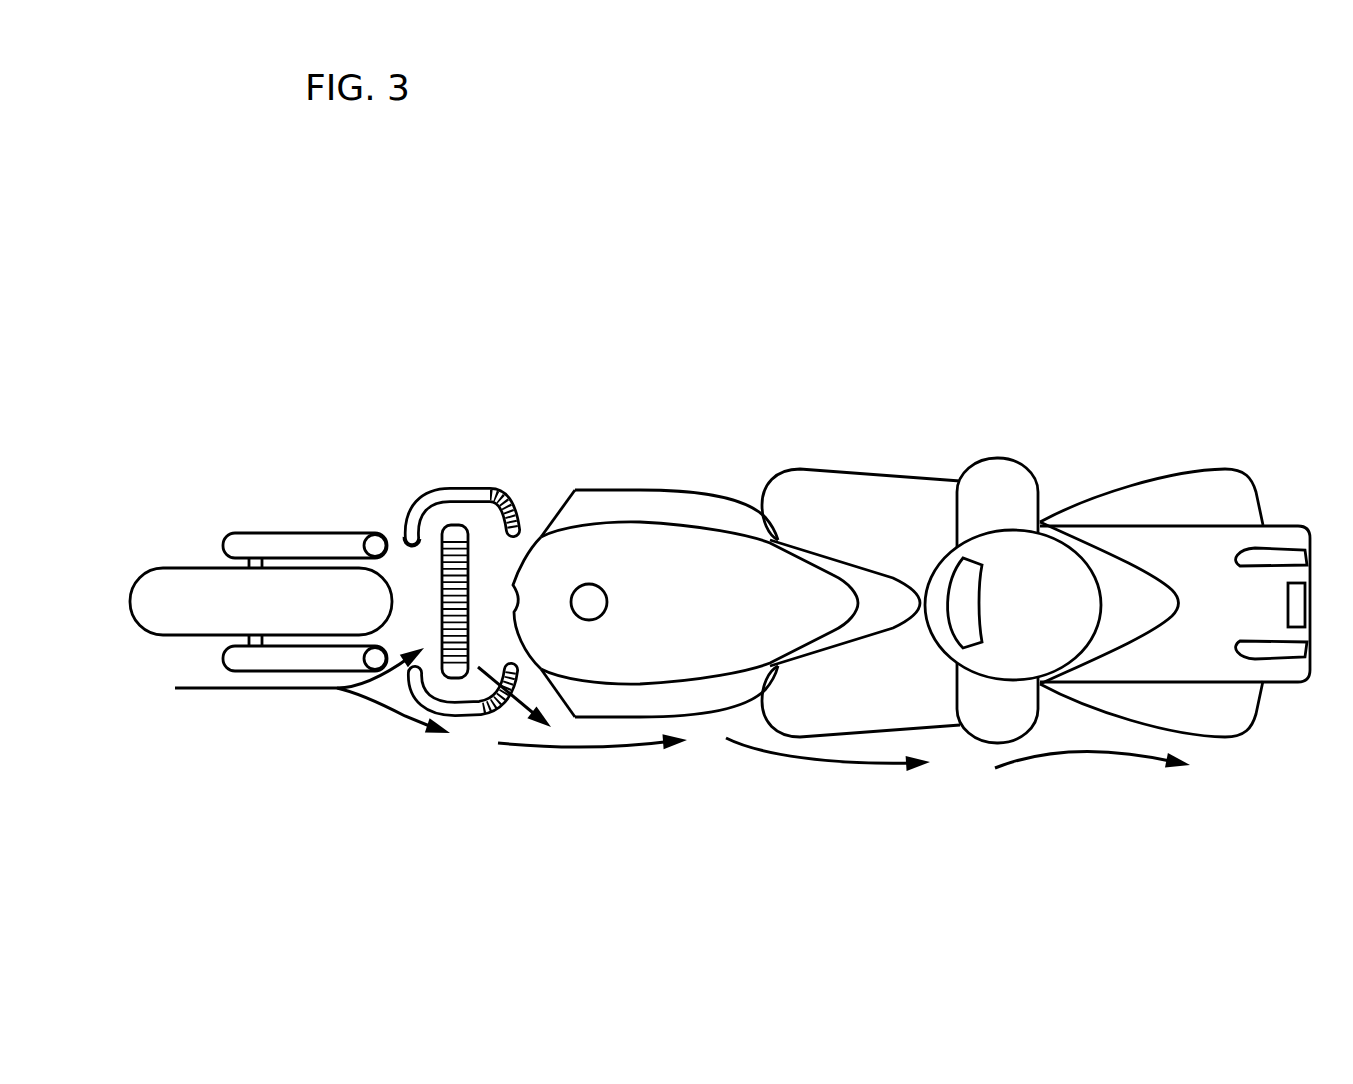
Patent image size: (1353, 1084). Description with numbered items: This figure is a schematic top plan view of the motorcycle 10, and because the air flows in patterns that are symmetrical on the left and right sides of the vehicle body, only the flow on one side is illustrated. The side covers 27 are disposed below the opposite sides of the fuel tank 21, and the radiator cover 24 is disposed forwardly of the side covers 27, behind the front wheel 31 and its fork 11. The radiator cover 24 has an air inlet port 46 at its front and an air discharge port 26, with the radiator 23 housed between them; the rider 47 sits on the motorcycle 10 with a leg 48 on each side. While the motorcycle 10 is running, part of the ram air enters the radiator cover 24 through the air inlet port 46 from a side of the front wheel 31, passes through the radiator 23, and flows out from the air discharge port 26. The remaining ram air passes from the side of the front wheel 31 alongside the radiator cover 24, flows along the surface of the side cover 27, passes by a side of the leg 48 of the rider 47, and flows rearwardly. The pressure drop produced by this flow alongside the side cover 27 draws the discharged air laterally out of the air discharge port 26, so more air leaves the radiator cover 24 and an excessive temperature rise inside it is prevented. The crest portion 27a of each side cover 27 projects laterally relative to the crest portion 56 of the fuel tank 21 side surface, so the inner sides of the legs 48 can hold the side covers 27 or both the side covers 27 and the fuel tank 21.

The motorcycle 10 is at (335, 427).
The front fork 11 is at (270, 532).
The front wheel 31 is at (168, 567).
The fuel tank 21 is at (687, 560).
The radiator 23 is at (458, 533).
The radiator cover 24 is at (452, 488).
The air discharge port 26 is at (517, 507).
The side cover 27 is at (608, 488).
The crest portion 27a is at (657, 488).
The air inlet port 46 is at (418, 542).
The rider 47 is at (997, 458).
The leg 48 is at (813, 473).
The crest portion of the fuel tank side surface 56 is at (703, 528).